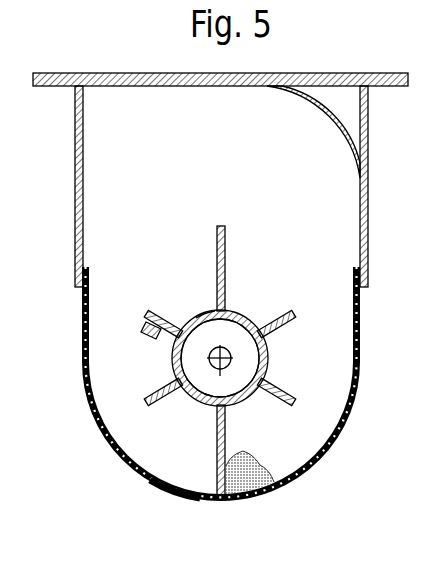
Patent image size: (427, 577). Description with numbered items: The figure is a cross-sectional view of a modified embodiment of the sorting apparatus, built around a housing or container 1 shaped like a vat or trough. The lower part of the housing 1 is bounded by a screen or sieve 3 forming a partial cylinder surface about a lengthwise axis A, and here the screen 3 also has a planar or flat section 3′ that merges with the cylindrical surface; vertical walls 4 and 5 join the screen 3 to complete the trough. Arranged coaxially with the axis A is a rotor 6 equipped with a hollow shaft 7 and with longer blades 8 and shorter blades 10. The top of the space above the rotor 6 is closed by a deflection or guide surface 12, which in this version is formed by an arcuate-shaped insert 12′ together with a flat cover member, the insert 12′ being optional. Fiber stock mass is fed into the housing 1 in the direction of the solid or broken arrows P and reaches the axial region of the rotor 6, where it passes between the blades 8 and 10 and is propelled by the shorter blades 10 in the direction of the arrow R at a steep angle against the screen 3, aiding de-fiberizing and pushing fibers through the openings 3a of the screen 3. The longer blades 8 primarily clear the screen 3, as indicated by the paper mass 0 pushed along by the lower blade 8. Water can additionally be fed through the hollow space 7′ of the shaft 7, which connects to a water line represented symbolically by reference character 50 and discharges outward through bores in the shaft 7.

The housing or container 1 is at (69, 168).
The screen or sieve 3 is at (322, 459).
The planar or flat section of the screen 3′ is at (81, 300).
The holes or openings of the screen 3a is at (177, 493).
The vertical wall 4 is at (75, 217).
The vertical wall 5 is at (368, 193).
The rotor 6 is at (262, 289).
The hollow shaft 7 is at (253, 398).
The hollow space of the shaft 7′ is at (243, 335).
The blades or vanes 8 is at (226, 238).
The blades or vanes 10 is at (294, 313).
The deflection or guide surface 12 is at (231, 89).
The arcuate-shaped insert 12′ is at (345, 133).
The water line or conduit 50 is at (231, 353).
The paper mass 0 is at (246, 465).
The lengthwise or cylinder axis A is at (217, 367).
The arrows indicating infeed direction P is at (185, 198).
The arrow indicating propelling direction R is at (97, 407).